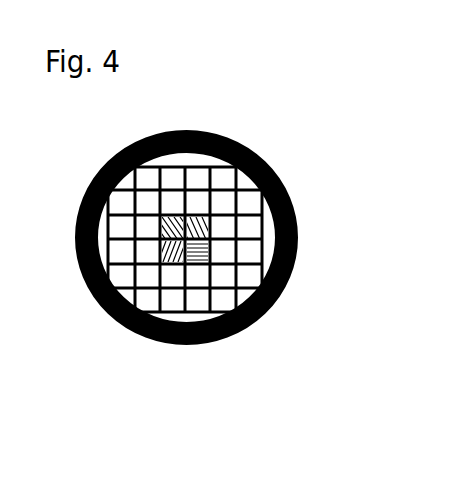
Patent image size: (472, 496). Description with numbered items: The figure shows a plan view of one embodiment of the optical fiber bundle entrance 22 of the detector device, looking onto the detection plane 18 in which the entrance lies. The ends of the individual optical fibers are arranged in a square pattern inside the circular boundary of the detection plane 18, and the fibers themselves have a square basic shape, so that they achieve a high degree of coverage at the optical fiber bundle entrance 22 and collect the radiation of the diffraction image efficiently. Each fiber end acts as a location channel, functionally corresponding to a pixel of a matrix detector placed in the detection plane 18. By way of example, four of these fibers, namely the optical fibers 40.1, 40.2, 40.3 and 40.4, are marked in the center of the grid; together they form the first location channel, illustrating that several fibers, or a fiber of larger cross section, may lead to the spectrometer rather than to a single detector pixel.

The detection plane 18 is at (241, 328).
The optical fiber bundle entrance 22 is at (97, 177).
The optical fiber 40.1 is at (163, 260).
The optical fiber 40.2 is at (203, 265).
The optical fiber 40.3 is at (217, 212).
The optical fiber 40.4 is at (118, 220).